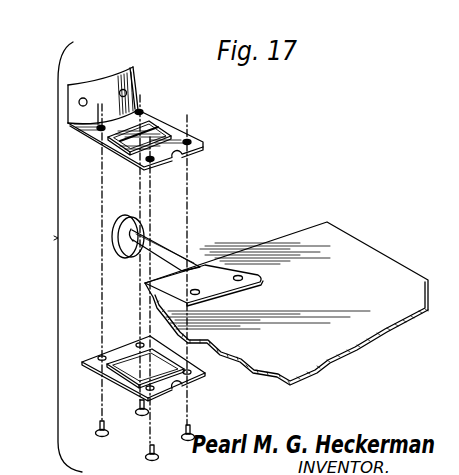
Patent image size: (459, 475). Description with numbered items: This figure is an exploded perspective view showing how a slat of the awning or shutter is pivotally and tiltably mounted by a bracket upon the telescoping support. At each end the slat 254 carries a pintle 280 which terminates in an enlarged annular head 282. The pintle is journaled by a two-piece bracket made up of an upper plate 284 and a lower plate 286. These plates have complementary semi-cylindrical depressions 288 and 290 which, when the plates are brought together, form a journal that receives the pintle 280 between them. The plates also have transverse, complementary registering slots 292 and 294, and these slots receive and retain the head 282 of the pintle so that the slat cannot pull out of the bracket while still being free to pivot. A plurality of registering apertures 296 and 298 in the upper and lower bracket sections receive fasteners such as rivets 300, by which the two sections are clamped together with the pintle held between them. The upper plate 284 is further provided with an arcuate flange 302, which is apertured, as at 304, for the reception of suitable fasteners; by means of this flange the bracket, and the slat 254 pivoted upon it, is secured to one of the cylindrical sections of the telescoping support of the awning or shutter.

The slat 254 is at (283, 250).
The pintle 280 is at (160, 248).
The enlarged annular head 282 is at (118, 250).
The upper plate 284 is at (163, 133).
The lower plate 286 is at (133, 374).
The semi-cylindrical depression 288 is at (157, 155).
The semi-cylindrical depression 290 is at (190, 389).
The transverse slot 292 is at (117, 134).
The transverse slot 294 is at (117, 370).
The aperture 296 is at (190, 142).
The aperture 298 is at (190, 367).
The rivet 300 is at (147, 450).
The arcuate flange 302 is at (112, 88).
The aperture 304 is at (83, 98).